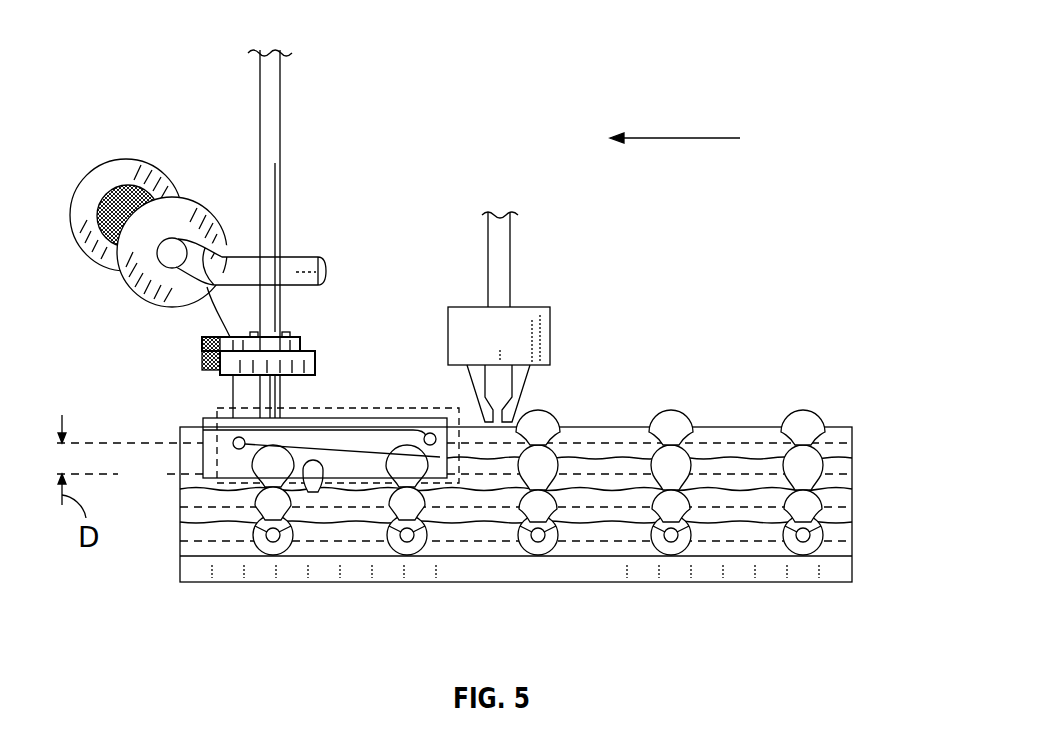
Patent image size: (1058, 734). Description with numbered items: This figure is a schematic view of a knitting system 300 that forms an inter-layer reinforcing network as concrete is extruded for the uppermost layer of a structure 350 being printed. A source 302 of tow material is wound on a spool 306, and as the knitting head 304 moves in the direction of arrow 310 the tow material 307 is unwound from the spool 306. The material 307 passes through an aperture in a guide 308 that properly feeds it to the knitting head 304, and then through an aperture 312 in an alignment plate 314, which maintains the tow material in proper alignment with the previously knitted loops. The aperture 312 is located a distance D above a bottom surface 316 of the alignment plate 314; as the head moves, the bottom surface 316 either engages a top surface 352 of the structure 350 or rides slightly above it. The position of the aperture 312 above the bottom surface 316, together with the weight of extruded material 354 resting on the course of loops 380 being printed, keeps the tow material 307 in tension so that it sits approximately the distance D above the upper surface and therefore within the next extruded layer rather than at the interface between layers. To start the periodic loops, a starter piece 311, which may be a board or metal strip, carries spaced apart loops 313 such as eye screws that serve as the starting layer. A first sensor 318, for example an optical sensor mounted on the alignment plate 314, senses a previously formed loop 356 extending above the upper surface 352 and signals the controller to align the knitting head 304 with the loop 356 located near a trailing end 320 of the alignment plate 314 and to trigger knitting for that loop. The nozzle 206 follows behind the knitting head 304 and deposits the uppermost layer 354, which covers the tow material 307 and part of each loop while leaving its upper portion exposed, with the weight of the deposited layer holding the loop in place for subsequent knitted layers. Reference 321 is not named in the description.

The knitting system 300 is at (566, 40).
The arrow 310 is at (687, 138).
The spool 306 is at (110, 186).
The source of tow material 302 is at (90, 250).
The knitting head 304 is at (313, 406).
The guide 308 is at (220, 368).
The tow material 307 is at (232, 387).
The alignment plate 314 is at (328, 415).
The first sensor 318 is at (438, 433).
The guide plate 321 is at (367, 427).
The aperture 312 is at (233, 444).
The nozzle 206 is at (564, 347).
The course of loops 380 is at (536, 410).
The extruded material 354 is at (834, 432).
The structure 350 is at (853, 533).
The spaced apart loops 313 is at (820, 540).
The starter piece 311 is at (830, 568).
The bottom surface 316 is at (230, 488).
The top surface 352 is at (315, 495).
The previously formed loop 356 is at (388, 456).
The trailing end 320 is at (482, 448).